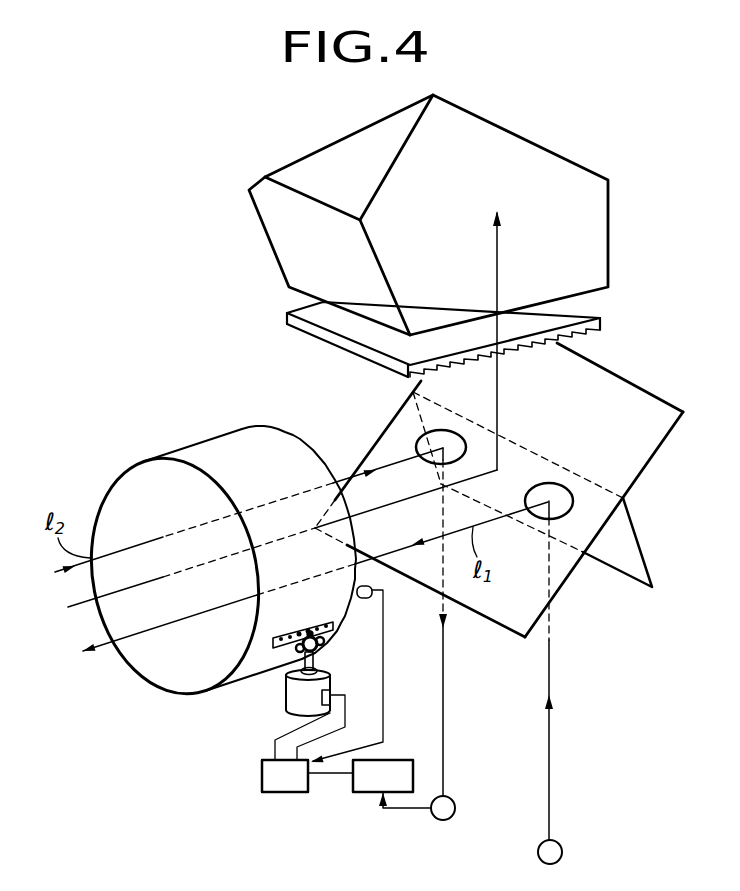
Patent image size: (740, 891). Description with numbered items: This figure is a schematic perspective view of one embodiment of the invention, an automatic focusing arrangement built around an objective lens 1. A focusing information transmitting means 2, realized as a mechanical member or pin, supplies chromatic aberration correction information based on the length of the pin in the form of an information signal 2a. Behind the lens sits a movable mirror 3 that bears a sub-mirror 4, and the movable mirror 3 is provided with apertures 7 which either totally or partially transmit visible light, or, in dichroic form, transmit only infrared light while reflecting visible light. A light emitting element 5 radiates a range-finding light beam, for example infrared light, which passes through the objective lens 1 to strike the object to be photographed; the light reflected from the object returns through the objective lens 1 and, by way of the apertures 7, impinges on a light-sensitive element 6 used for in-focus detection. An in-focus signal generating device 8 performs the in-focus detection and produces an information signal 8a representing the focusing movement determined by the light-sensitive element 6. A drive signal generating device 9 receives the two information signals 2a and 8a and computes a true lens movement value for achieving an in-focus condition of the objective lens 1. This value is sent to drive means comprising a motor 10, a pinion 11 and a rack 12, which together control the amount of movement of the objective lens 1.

The objective lens 1 is at (255, 672).
The focusing information transmitting means 2 is at (365, 600).
The information signal 2a is at (348, 748).
The movable mirror 3 is at (632, 395).
The sub-mirror 4 is at (630, 568).
The light emitting element 5 is at (557, 858).
The light-sensitive element 6 is at (443, 820).
The apertures 7 is at (463, 437).
The in-focus signal generating device 8 is at (367, 793).
The information signal 8a is at (330, 777).
The drive signal generating device 9 is at (275, 793).
The motor 10 is at (290, 710).
The pinion 11 is at (322, 653).
The rack 12 is at (277, 638).